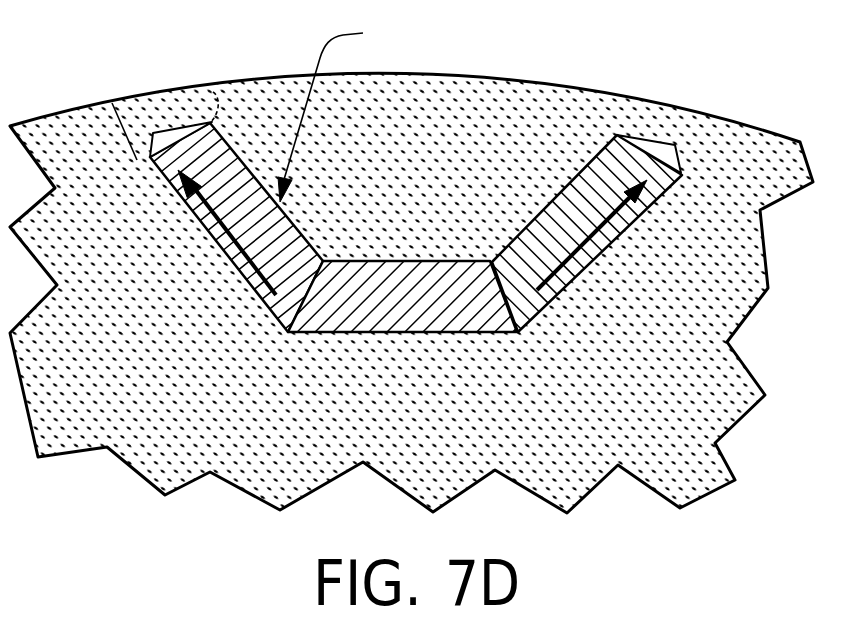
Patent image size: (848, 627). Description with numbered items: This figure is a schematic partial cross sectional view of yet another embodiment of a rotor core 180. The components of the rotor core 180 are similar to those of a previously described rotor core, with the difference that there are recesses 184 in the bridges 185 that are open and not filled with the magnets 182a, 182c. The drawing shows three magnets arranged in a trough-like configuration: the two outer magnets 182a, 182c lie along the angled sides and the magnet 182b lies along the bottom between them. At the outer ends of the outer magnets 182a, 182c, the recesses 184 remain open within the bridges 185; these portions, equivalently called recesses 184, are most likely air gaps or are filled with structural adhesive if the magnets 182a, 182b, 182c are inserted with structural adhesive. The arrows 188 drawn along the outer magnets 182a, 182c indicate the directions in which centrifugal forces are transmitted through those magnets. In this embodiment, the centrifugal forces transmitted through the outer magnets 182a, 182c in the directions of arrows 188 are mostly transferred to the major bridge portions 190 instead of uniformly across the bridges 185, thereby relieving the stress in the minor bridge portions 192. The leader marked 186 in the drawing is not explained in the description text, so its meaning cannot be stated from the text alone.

The rotor core 180 is at (135, 468).
The outer magnet 182a is at (298, 215).
The magnet 182b is at (394, 320).
The outer magnet 182c is at (551, 197).
The recess 184 is at (650, 146).
The bridge 185 is at (170, 110).
The direction arrow 186 is at (341, 110).
The arrow 188 is at (225, 258).
The major bridge portion 190 is at (85, 140).
The minor bridge portion 192 is at (211, 123).